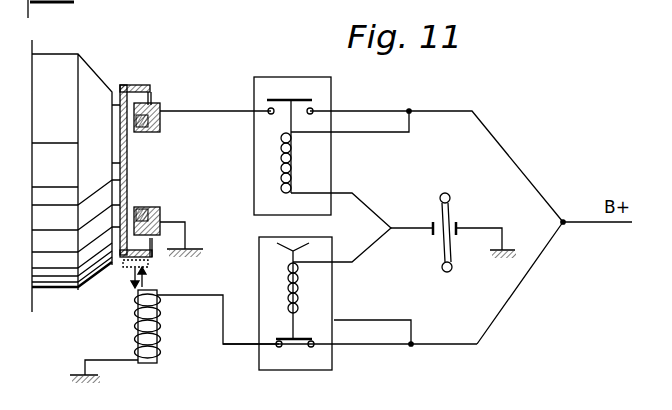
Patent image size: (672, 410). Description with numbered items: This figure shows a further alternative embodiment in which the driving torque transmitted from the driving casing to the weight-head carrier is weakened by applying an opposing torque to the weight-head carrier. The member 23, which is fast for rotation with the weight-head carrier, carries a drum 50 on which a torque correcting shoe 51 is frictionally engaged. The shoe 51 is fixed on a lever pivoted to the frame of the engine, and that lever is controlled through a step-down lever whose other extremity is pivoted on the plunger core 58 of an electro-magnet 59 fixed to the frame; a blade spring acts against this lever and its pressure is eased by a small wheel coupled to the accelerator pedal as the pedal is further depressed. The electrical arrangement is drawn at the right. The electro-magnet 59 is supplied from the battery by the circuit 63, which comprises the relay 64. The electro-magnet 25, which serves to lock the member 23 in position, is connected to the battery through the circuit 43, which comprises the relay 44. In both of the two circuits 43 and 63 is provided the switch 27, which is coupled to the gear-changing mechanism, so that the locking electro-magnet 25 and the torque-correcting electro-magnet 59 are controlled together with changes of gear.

The member 23 is at (117, 107).
The drum 50 is at (143, 85).
The electro-magnet 25 is at (147, 208).
The shoe 51 is at (124, 269).
The plunger core 58 is at (158, 293).
The electro-magnet 59 is at (160, 337).
The relay 44 is at (322, 165).
The circuit 43 is at (399, 133).
The switch 27 is at (450, 217).
The relay 64 is at (327, 307).
The circuit 63 is at (392, 320).